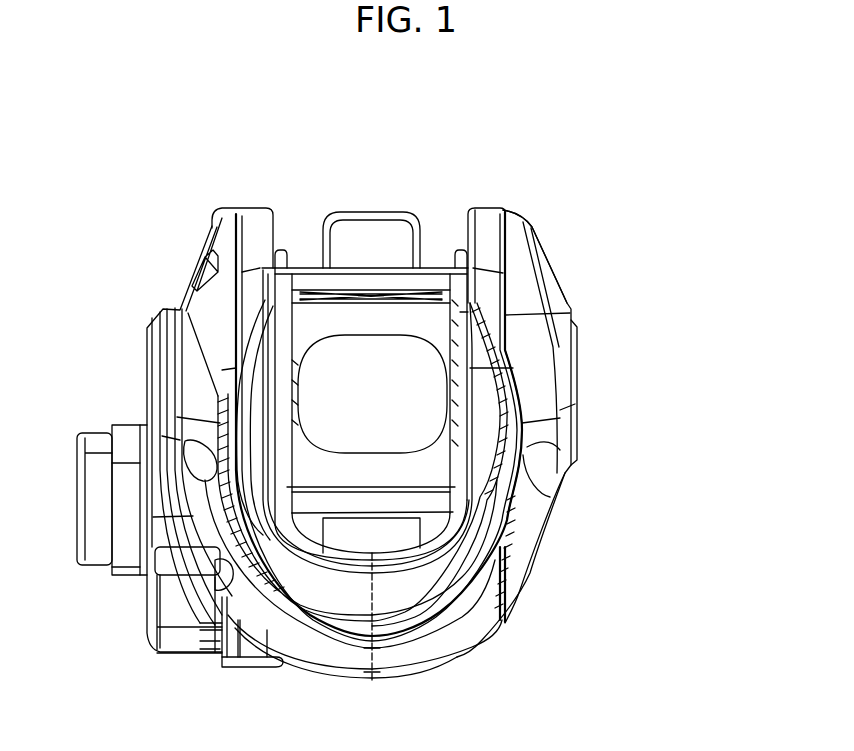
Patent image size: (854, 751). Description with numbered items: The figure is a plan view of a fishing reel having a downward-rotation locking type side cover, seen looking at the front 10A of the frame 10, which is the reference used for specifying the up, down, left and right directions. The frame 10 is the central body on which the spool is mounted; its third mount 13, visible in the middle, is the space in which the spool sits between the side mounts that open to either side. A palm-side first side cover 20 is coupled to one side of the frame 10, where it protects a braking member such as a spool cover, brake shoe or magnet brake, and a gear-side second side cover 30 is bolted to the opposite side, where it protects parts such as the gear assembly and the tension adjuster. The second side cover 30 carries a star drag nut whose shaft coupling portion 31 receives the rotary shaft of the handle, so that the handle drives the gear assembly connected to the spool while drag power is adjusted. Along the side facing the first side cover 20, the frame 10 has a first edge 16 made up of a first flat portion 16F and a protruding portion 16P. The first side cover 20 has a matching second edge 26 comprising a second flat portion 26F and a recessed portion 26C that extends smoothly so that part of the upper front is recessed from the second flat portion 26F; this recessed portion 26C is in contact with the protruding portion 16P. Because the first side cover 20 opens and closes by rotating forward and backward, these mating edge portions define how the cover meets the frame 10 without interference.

The frame 10 is at (407, 587).
The front of the frame 10A is at (467, 640).
The third mount 13 is at (374, 390).
The first edge 16 is at (605, 435).
The second edge 26 is at (517, 356).
The first flat portion 16F is at (611, 256).
The second flat portion 26F is at (503, 279).
The protruding portion 16P is at (630, 466).
The recessed portion 26C is at (523, 470).
The first side cover 20 is at (557, 495).
The second side cover 30 is at (200, 337).
The shaft coupling portion 31 is at (97, 547).